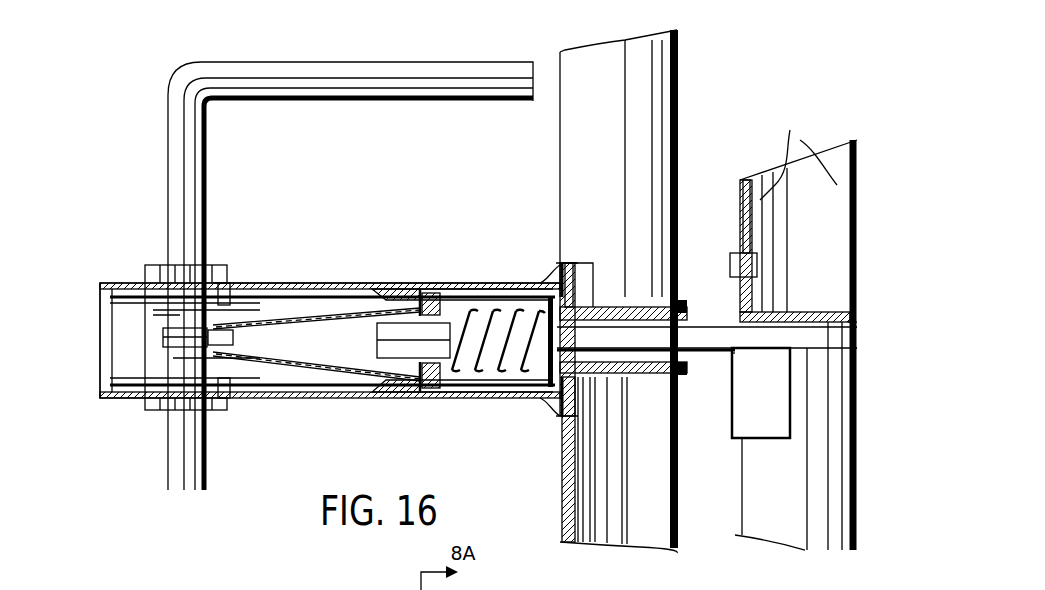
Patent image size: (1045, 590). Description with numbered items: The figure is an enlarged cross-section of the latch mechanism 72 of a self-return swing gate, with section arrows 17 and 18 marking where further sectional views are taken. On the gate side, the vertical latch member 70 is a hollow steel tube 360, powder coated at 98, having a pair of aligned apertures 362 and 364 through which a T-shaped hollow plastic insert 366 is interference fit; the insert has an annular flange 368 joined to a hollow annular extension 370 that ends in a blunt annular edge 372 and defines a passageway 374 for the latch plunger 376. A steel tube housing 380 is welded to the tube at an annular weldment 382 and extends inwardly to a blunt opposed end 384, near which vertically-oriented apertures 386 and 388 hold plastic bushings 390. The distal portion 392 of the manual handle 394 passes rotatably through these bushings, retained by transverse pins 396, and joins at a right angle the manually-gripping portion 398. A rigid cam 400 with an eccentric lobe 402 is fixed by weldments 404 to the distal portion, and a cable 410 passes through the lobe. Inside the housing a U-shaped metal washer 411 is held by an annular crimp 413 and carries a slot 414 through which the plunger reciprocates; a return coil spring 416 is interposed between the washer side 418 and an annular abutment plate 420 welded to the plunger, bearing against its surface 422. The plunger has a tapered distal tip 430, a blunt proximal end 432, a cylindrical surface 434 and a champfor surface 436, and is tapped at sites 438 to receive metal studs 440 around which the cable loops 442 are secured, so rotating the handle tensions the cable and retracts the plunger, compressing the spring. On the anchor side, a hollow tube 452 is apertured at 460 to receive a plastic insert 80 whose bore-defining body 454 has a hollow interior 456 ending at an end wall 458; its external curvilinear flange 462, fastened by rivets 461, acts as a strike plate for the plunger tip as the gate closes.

The section line 17 is at (125, 308).
The section line 18 is at (713, 300).
The vertical latch member 70 is at (552, 168).
The latch mechanism 72 is at (320, 268).
The plastic insert 80 is at (795, 298).
The powder coating 98 is at (568, 528).
The steel tube 360 is at (592, 546).
The aperture 362 is at (590, 300).
The aperture 364 is at (676, 305).
The hollow plastic insert 366 is at (645, 386).
The annular flange 368 is at (693, 378).
The hollow annular extension 370 is at (618, 432).
The blunt annular edge 372 is at (646, 337).
The hollow passageway 374 is at (622, 470).
The latch plunger 376 is at (773, 336).
The steel tube housing 380 is at (355, 399).
The annular weldment 382 is at (562, 282).
The opposed end 384 is at (105, 288).
The aperture 386 is at (115, 333).
The aperture 388 is at (240, 398).
The plastic bushing 390 is at (152, 272).
The distal portion 392 is at (196, 162).
The manual handle 394 is at (164, 78).
The transverse pin 396 is at (160, 266).
The manually-gripping portion 398 is at (372, 72).
The rigid cam 400 is at (228, 290).
The eccentric lobe 402 is at (312, 382).
The weldment 404 is at (165, 340).
The cable 410 is at (300, 320).
The U-shaped metal washer 411 is at (478, 289).
The annular crimp 413 is at (440, 398).
The horizontally-directed slot 414 is at (490, 290).
The return coil spring 416 is at (548, 283).
The side 418 is at (503, 396).
The annular abutment plate 420 is at (548, 397).
The surface 422 is at (560, 265).
The tapered distal tip 430 is at (856, 328).
The blunt proximal end 432 is at (366, 284).
The cylindrical surface 434 is at (735, 370).
The champfor surface 436 is at (380, 288).
The tapped site 438 is at (380, 340).
The metal stud 440 is at (430, 292).
The loop 442 is at (395, 289).
The hollow tube 452 is at (770, 182).
The bore-defining body 454 is at (822, 312).
The cylindrically-hollow interior 456 is at (808, 314).
The end wall 458 is at (856, 349).
The aperture 460 is at (775, 290).
The rivet 461 is at (737, 280).
The external curvilinear flange 462 is at (745, 255).